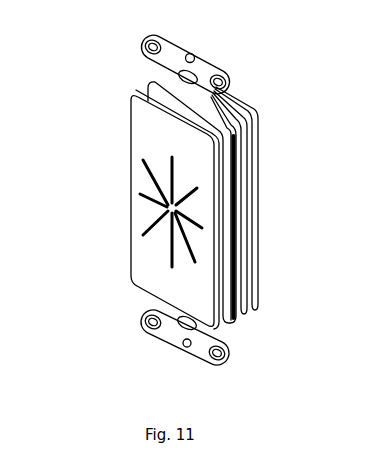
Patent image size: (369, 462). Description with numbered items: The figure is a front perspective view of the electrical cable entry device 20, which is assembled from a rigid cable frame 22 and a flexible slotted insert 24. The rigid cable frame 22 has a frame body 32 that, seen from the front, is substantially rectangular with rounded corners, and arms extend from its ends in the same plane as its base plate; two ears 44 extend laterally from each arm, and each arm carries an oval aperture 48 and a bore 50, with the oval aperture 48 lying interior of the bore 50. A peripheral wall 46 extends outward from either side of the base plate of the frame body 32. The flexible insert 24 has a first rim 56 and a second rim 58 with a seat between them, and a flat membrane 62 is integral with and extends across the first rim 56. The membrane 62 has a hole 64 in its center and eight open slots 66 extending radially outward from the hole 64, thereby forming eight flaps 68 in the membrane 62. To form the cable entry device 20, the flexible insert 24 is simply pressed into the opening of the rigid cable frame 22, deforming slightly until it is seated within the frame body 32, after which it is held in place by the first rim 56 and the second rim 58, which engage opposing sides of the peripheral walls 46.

The electrical cable entry device 20 is at (80, 98).
The rigid cable frame 22 is at (234, 152).
The flexible insert 24 is at (146, 268).
The frame body 32 is at (252, 309).
The ears 44 is at (229, 373).
The peripheral wall 46 is at (224, 250).
The oval aperture 48 is at (198, 42).
The bore 50 is at (231, 84).
The first rim 56 is at (224, 177).
The second rim 58 is at (253, 117).
The membrane 62 is at (163, 143).
The hole 64 is at (167, 209).
The open slots 66 is at (176, 209).
The flaps 68 is at (172, 233).